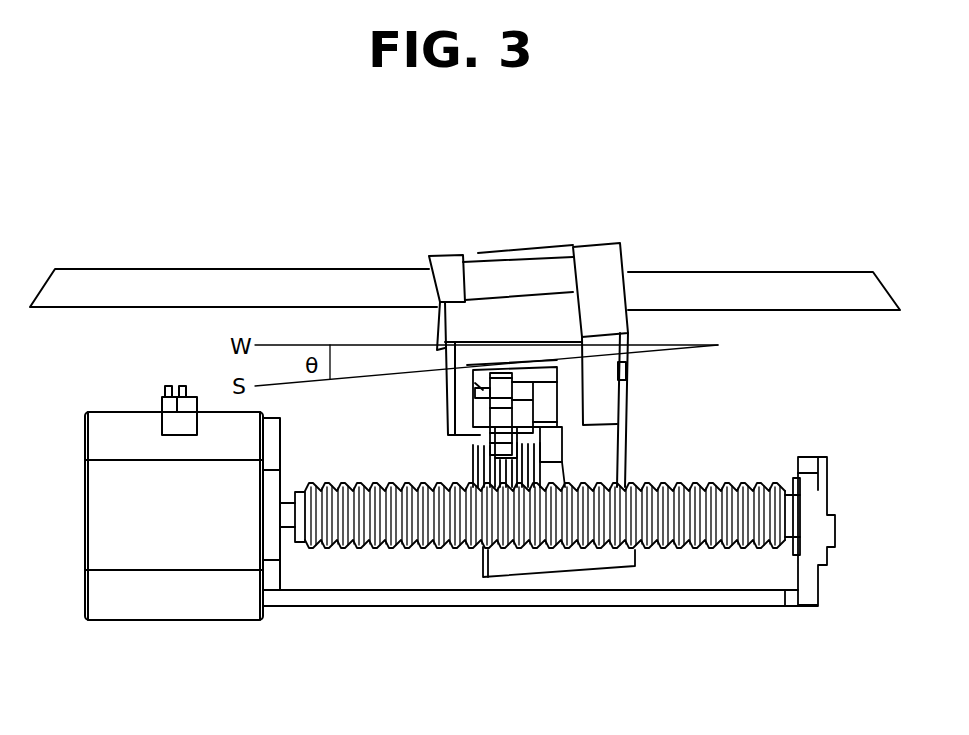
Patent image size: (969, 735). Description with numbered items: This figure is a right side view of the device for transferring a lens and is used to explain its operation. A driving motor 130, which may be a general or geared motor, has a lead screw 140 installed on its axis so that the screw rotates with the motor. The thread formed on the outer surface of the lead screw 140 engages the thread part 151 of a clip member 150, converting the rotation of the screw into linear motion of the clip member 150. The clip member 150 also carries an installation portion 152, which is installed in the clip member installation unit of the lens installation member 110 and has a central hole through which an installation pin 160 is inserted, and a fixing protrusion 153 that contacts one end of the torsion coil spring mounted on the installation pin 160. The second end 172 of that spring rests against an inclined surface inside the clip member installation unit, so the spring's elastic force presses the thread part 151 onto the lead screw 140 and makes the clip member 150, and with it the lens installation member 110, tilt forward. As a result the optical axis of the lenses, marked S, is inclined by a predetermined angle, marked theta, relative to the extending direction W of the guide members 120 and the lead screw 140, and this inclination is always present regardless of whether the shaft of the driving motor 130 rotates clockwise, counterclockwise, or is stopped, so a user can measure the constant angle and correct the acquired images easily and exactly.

The lens installation member 110 is at (593, 253).
The guide members 120 is at (748, 280).
The driving motor 130 is at (168, 552).
The lead screw 140 is at (413, 550).
The clip member 150 is at (577, 448).
The thread part 151 is at (532, 550).
The installation portion 152 is at (575, 397).
The fixing protrusion 153 is at (478, 430).
The installation pin 160 is at (480, 412).
The second end 172 is at (478, 399).